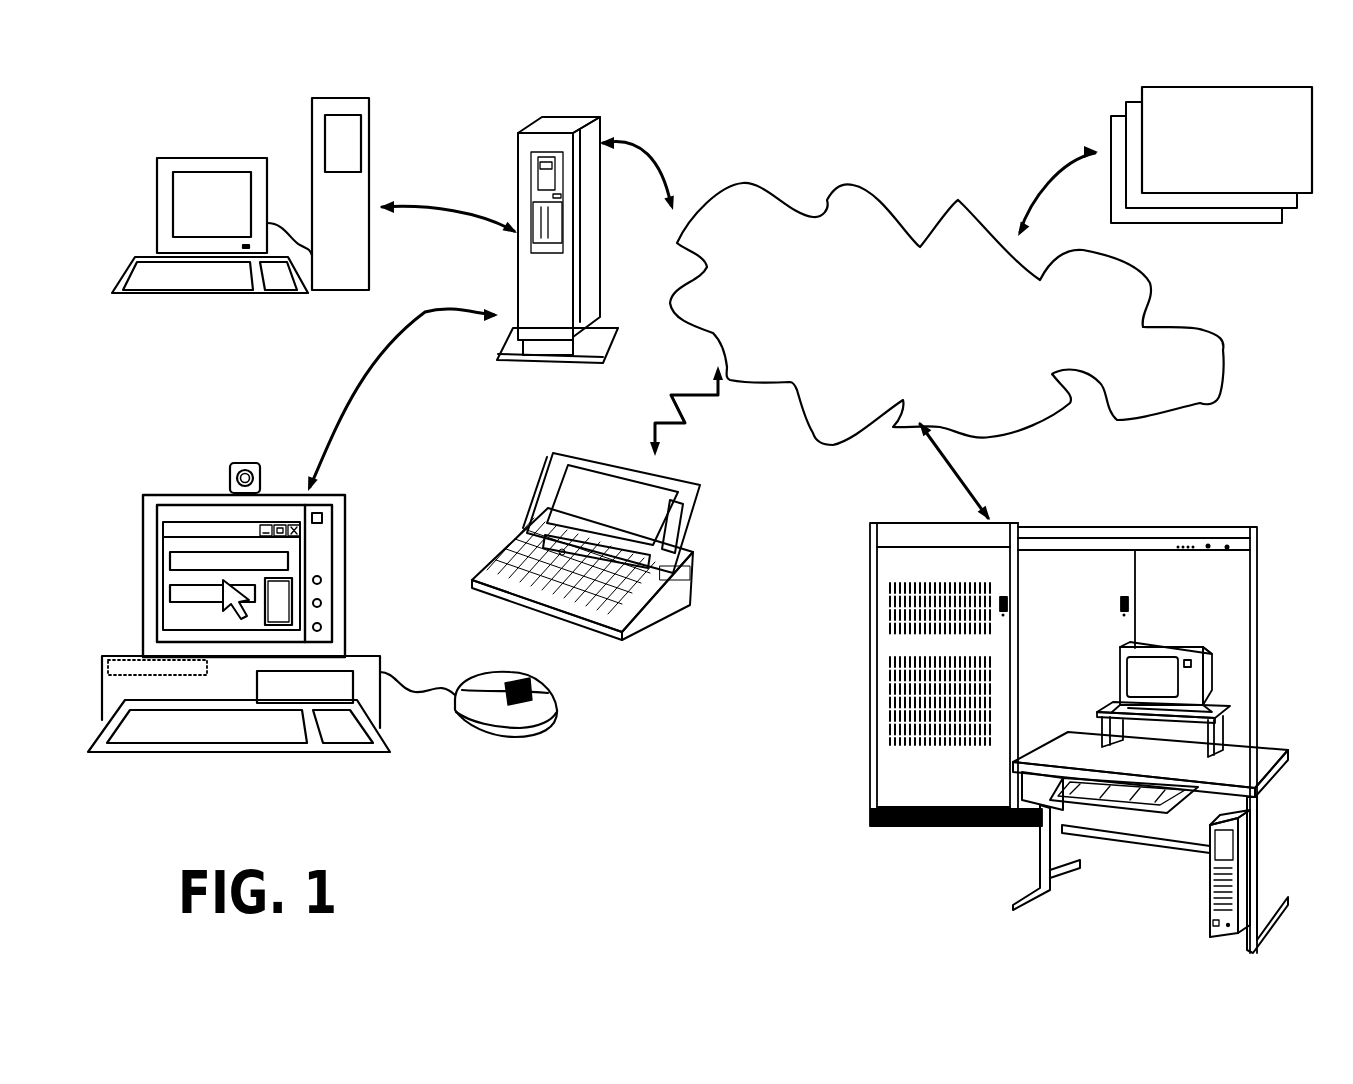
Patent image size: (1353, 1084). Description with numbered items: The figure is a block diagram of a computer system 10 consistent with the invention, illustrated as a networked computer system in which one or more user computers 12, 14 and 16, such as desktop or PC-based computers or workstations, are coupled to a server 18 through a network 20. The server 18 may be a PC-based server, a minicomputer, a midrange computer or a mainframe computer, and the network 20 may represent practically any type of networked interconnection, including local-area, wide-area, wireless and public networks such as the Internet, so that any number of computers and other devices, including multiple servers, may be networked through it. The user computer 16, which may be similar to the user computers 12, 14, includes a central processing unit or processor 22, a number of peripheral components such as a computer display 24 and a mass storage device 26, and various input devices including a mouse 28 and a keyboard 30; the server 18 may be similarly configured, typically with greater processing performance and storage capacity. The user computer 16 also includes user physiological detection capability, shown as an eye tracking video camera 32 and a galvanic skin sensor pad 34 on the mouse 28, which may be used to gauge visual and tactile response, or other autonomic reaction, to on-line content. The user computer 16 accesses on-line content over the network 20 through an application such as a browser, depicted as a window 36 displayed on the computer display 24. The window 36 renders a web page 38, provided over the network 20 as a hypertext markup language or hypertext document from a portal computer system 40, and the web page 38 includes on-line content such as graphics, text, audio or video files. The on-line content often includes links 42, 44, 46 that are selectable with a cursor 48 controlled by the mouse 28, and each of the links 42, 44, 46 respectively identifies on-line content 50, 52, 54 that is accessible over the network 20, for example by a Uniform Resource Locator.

The computer system 10 is at (849, 105).
The user computer 12 is at (200, 157).
The user computer 14 is at (548, 455).
The user computer 16 is at (339, 593).
The server 18 is at (540, 120).
The network 20 is at (703, 155).
The central processing unit 22 is at (232, 671).
The computer display 24 is at (245, 557).
The mass storage device 26 is at (343, 668).
The mouse 28 is at (499, 690).
The keyboard 30 is at (380, 752).
The eye tracking video camera 32 is at (233, 462).
The galvanic skin sensor pad 34 is at (520, 685).
The window 36 is at (245, 544).
The web page 38 is at (187, 528).
The portal computer system 40 is at (1189, 494).
The link 42 is at (183, 563).
The link 44 is at (285, 605).
The link 46 is at (187, 592).
The cursor 48 is at (240, 613).
The on-line content 50 is at (1228, 228).
The on-line content 52 is at (1287, 212).
The on-line content 54 is at (1196, 173).